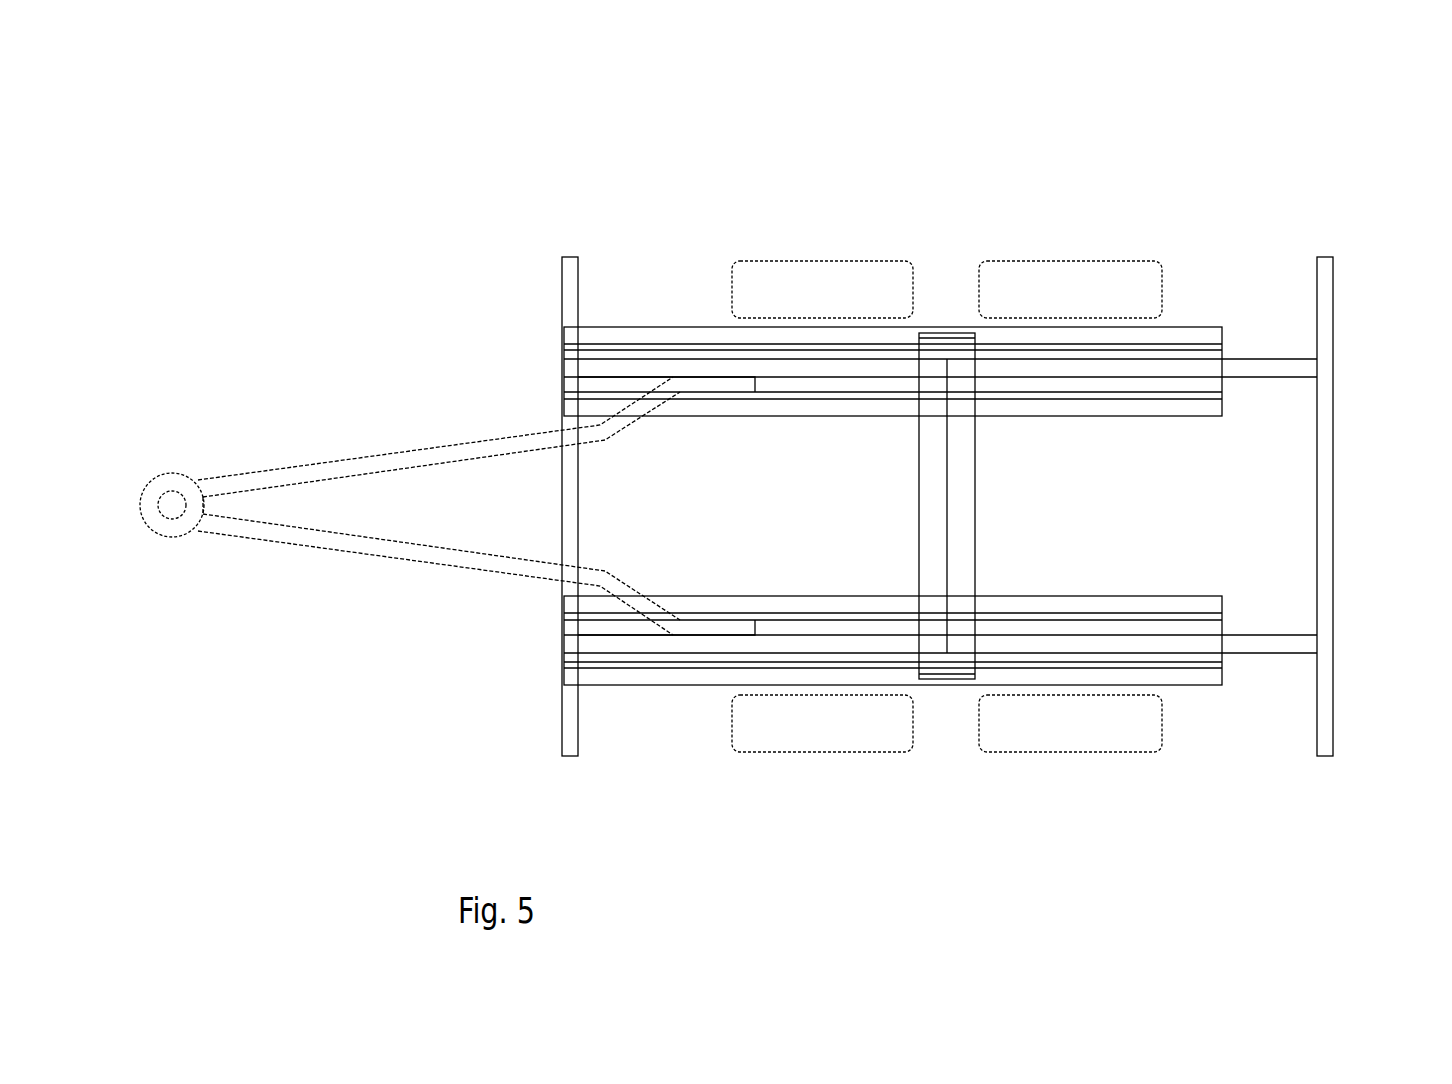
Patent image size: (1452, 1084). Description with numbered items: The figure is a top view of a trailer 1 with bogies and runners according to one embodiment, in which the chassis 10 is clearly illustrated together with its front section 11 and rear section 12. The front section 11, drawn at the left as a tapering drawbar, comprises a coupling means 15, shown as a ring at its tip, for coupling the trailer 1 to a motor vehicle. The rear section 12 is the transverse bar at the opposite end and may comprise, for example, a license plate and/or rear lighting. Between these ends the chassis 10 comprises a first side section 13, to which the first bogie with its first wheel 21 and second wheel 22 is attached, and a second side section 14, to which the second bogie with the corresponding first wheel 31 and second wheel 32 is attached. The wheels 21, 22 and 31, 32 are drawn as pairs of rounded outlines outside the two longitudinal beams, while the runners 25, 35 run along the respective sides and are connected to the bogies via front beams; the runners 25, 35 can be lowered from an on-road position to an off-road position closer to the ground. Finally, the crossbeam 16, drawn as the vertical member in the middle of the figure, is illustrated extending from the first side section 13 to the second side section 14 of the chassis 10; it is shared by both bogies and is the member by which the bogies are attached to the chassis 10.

The trailer 1 is at (407, 213).
The chassis 10 is at (439, 530).
The front section 11 is at (322, 472).
The rear section 12 is at (1320, 447).
The first side section 13 is at (1231, 644).
The second side section 14 is at (1249, 363).
The coupling means 15 is at (170, 480).
The crossbeam 16 is at (955, 525).
The first wheel 21 is at (763, 735).
The second wheel 22 is at (1018, 728).
The runner 25 is at (1152, 673).
The first wheel 31 is at (777, 282).
The second wheel 32 is at (1062, 282).
The runner 35 is at (1171, 331).